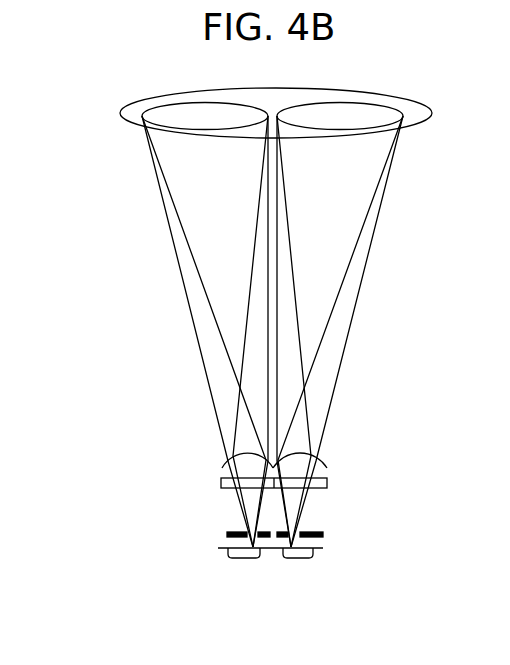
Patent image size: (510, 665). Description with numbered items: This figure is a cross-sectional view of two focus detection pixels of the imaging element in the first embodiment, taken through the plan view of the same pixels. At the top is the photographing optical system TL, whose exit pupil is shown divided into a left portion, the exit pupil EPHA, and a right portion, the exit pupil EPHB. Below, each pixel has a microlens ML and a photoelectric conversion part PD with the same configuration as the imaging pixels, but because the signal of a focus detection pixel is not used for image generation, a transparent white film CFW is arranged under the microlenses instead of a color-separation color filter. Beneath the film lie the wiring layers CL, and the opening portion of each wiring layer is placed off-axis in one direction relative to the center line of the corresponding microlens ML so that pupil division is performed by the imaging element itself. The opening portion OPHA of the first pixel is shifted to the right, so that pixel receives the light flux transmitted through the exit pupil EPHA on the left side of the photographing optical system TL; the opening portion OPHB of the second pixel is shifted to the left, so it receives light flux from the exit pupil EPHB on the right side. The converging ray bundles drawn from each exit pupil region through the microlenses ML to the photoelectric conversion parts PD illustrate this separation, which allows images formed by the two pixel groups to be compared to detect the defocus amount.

The photographing optical system TL is at (133, 110).
The exit pupil EPHA is at (180, 112).
The exit pupil EPHB is at (347, 112).
The opening portion OPHA is at (252, 523).
The opening portion OPHB is at (290, 521).
The microlens ML is at (248, 463).
The transparent film CFW is at (363, 447).
The wiring layer CL is at (323, 533).
The photoelectric conversion part PD is at (248, 553).